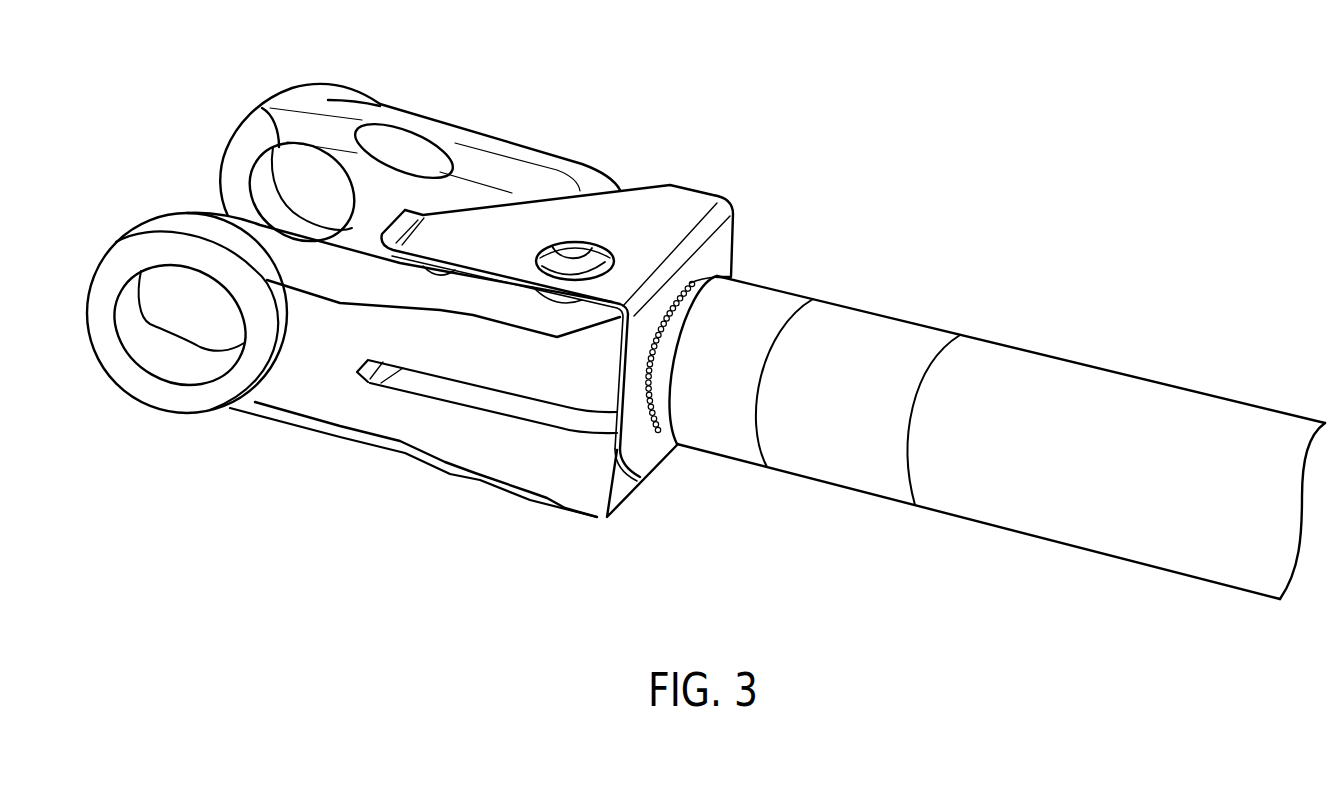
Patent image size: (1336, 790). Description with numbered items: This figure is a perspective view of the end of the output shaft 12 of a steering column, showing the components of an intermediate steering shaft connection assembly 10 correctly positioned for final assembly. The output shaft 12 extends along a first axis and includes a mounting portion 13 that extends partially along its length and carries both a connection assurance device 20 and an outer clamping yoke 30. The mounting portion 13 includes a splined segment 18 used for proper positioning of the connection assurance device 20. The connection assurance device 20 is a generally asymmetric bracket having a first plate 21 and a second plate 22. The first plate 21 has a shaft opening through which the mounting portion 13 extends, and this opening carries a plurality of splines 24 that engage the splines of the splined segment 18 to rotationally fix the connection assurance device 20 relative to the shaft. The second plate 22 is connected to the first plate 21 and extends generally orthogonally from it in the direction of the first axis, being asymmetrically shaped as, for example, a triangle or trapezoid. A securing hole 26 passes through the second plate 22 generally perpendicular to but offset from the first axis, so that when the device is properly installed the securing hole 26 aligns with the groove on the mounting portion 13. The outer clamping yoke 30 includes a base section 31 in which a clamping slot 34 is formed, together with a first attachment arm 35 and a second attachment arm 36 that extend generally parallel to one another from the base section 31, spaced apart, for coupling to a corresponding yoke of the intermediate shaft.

The intermediate steering shaft connection assembly 10 is at (648, 81).
The output shaft 12 is at (824, 523).
The mounting portion 13 is at (663, 407).
The splined segment 18 is at (685, 298).
The connection assurance device 20 is at (716, 191).
The first plate 21 is at (643, 456).
The second plate 22 is at (638, 199).
The plurality of splines 24 is at (690, 282).
The securing hole 26 is at (556, 250).
The outer clamping yoke 30 is at (541, 131).
The base section 31 is at (520, 480).
The clamping slot 34 is at (453, 392).
The first attachment arm 35 is at (139, 380).
The second attachment arm 36 is at (316, 96).